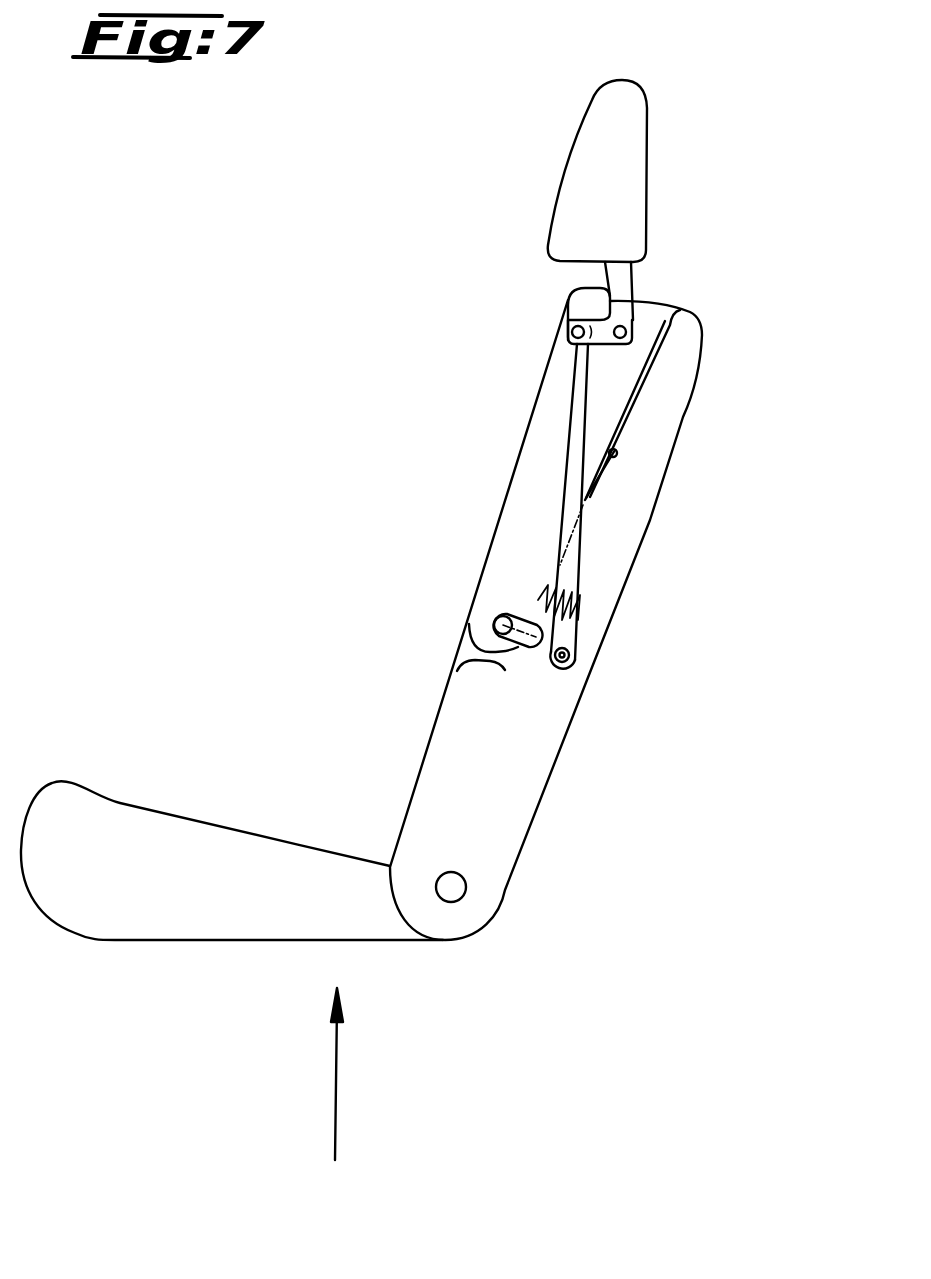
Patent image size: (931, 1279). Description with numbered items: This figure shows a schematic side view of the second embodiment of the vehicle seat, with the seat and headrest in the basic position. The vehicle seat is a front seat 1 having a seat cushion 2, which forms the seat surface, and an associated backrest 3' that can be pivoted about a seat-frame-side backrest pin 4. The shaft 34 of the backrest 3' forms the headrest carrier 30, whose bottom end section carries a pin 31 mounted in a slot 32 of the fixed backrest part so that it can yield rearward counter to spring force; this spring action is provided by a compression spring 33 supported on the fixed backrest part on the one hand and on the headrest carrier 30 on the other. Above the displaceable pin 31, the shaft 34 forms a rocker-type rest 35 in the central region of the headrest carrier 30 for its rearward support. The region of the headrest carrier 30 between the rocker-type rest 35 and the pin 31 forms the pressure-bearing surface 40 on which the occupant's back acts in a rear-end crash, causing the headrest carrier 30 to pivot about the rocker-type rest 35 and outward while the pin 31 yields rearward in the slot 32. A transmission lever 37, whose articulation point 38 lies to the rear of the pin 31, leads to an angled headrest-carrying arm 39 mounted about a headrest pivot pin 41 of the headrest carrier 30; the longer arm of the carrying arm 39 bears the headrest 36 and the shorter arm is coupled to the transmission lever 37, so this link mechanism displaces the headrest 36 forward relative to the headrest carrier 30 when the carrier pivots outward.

The front seat 1 is at (336, 1099).
The seat cushion 2 is at (150, 907).
The backrest 3' is at (559, 620).
The backrest pin 4 is at (466, 887).
The headrest carrier 30 is at (540, 468).
The pin 31 is at (503, 625).
The slot 32 is at (540, 662).
The compression spring 33 is at (580, 610).
The shaft 34 is at (617, 451).
The rocker-type rest 35 is at (588, 500).
The headrest 36 is at (625, 125).
The transmission lever 37 is at (580, 405).
The articulation point 38 is at (569, 656).
The headrest-carrying arm 39 is at (627, 282).
The pressure-bearing surface 40 is at (507, 505).
The headrest pivot pin 41 is at (626, 331).